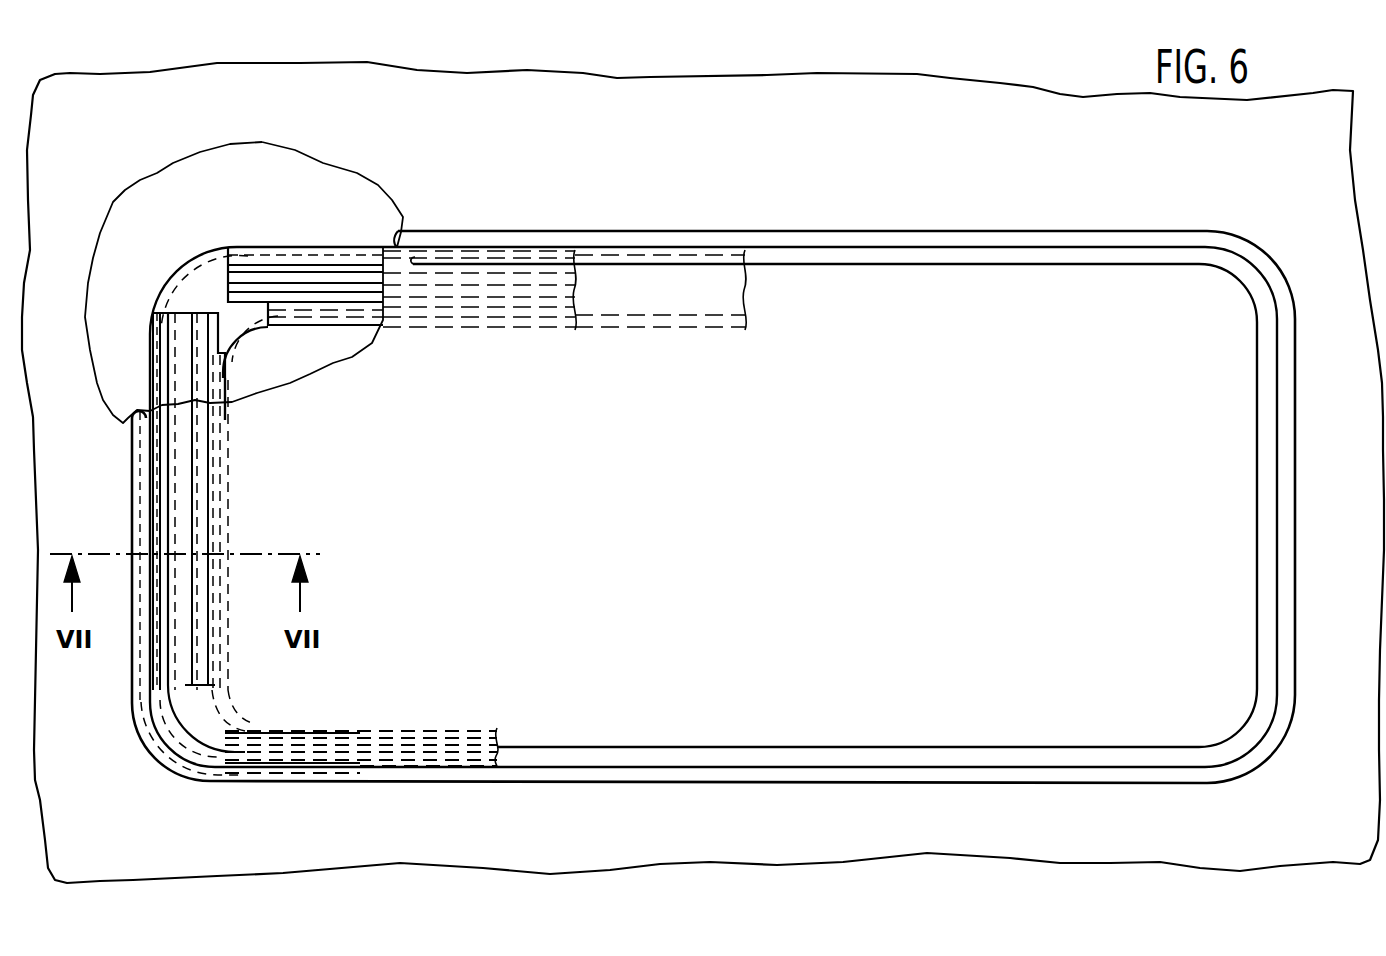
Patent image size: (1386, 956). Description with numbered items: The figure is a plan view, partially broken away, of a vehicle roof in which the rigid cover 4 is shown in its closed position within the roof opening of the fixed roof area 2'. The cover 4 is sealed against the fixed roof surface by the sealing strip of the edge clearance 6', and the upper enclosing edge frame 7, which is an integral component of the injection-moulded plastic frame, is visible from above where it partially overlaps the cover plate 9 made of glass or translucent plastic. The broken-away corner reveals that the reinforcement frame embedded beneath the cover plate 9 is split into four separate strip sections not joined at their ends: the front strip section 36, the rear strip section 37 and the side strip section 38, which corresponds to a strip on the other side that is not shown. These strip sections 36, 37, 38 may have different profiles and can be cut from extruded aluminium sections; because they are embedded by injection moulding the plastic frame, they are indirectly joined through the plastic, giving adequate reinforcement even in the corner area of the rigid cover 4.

The fixed roof area 2' is at (709, 147).
The rigid cover 4 is at (1118, 230).
The sealing strip of the edge clearance 6' is at (709, 471).
The upper enclosing edge frame 7 is at (1010, 258).
The cover plate 9 is at (336, 384).
The front strip section 36 is at (278, 268).
The rear strip section 37 is at (405, 732).
The side strip section 38 is at (186, 347).